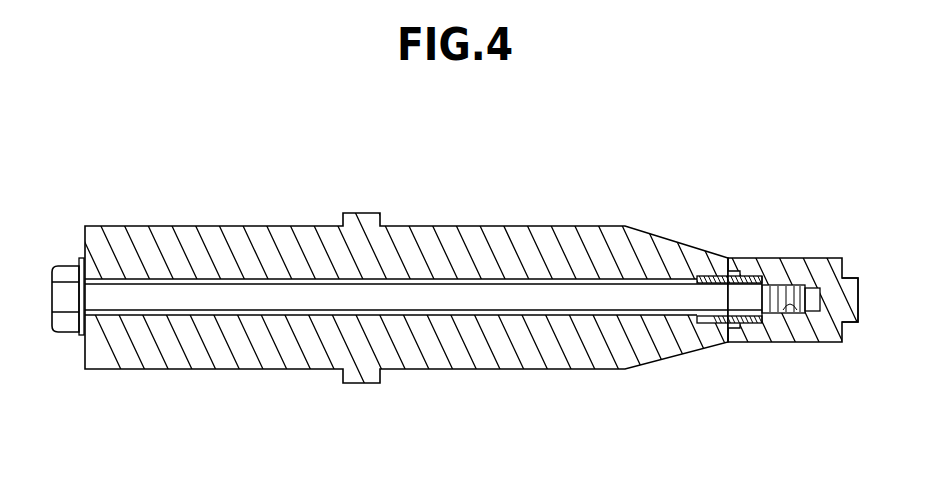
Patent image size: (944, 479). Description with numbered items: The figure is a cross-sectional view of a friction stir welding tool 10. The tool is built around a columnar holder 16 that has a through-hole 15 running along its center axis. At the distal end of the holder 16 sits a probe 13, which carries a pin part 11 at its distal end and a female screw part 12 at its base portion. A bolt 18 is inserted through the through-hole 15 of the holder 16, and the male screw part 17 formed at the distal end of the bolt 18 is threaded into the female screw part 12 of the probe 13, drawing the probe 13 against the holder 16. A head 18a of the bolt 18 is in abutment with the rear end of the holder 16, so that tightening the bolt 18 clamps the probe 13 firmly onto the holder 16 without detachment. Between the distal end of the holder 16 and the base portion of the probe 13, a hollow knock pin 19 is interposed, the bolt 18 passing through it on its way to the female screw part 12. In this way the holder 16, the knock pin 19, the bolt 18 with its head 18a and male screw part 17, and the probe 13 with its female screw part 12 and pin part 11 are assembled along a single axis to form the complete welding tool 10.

The friction stir welding tool 10 is at (183, 123).
The pin part 11 is at (852, 323).
The female screw part 12 is at (798, 310).
The probe 13 is at (795, 257).
The through-hole 15 is at (520, 318).
The columnar holder 16 is at (442, 227).
The male screw part 17 is at (775, 315).
The bolt 18 is at (437, 302).
The head 18a is at (70, 265).
The hollow knock pin 19 is at (729, 270).